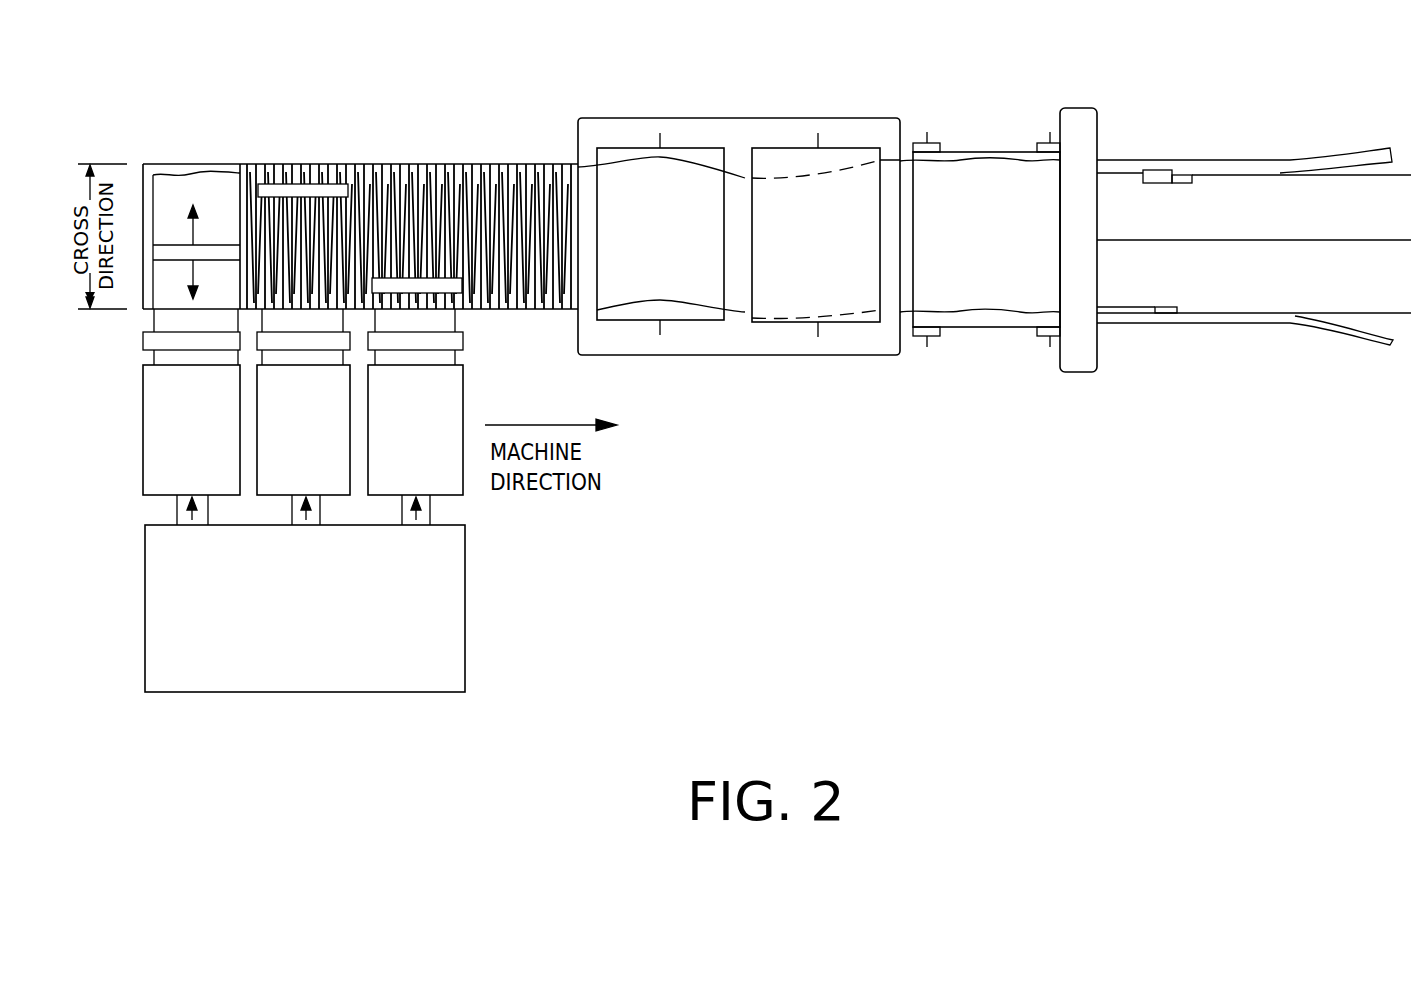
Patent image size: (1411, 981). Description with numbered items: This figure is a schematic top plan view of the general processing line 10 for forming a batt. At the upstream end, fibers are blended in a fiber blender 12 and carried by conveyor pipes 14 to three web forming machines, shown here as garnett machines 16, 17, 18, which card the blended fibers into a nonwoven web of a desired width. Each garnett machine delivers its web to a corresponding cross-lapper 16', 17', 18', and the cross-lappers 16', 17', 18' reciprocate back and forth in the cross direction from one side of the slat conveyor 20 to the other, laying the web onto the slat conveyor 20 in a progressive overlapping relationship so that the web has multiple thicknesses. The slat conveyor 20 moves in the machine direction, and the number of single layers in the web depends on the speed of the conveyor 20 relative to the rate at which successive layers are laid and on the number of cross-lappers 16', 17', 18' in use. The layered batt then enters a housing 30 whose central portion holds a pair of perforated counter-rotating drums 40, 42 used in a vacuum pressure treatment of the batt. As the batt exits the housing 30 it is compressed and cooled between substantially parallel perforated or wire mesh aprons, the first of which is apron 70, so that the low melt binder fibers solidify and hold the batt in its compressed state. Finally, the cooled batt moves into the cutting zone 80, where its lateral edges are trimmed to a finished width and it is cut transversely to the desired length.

The processing line 10 is at (772, 648).
The fiber blender 12 is at (440, 638).
The conveyor pipes 14 is at (208, 510).
The garnett machine 16 is at (191, 402).
The garnett machine 17 is at (303, 402).
The garnett machine 18 is at (415, 402).
The cross-lapper 16' is at (360, 198).
The cross-lapper 17' is at (303, 142).
The cross-lapper 18' is at (417, 192).
The slat conveyor 20 is at (527, 163).
The housing 30 is at (753, 235).
The drum 40 is at (617, 318).
The drum 42 is at (865, 320).
The first apron 70 is at (972, 192).
The cutting zone 80 is at (1255, 143).